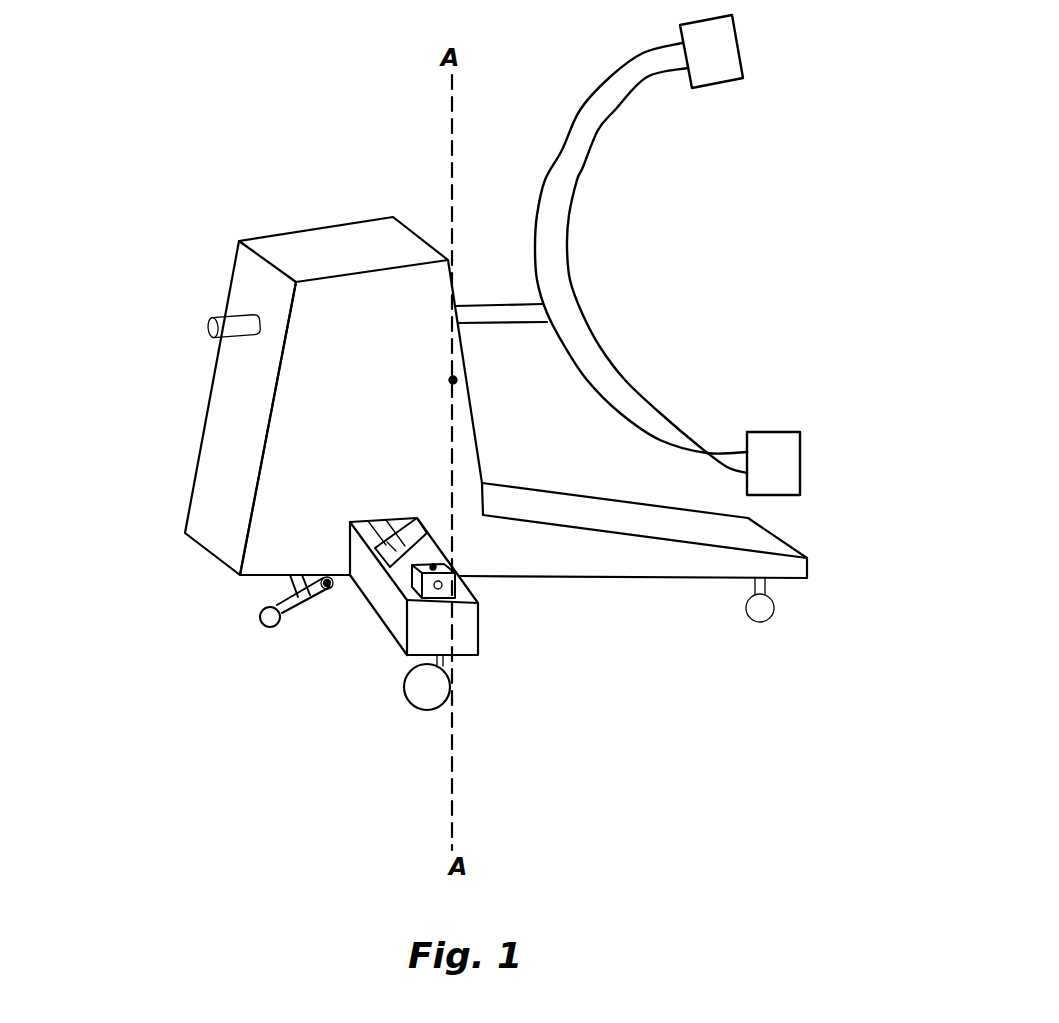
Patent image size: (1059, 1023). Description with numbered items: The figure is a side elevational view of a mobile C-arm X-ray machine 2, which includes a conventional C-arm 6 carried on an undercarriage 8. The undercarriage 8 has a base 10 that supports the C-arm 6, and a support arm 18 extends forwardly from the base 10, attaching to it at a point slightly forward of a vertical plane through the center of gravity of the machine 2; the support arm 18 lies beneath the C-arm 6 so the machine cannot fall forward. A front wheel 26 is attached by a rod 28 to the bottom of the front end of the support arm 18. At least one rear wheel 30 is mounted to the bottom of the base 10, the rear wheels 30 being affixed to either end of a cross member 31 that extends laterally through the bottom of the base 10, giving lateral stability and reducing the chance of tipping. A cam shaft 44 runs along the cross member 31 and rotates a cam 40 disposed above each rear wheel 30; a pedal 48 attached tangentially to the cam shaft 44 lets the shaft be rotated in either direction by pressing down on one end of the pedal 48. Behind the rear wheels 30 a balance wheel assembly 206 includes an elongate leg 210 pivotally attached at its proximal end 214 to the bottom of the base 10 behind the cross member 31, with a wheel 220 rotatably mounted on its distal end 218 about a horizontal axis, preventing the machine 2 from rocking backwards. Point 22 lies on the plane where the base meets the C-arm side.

The mobile C-arm X-ray machine 2 is at (338, 156).
The C-arm 6 is at (573, 152).
The undercarriage 8 is at (160, 423).
The base 10 is at (334, 396).
The support arm 18 is at (613, 513).
The pivot axis point 22 is at (457, 381).
The front wheel 26 is at (760, 608).
The rod 28 is at (753, 585).
The rear wheel 30 is at (428, 697).
The cross member 31 is at (385, 595).
The cam 40 is at (436, 568).
The cam shaft 44 is at (397, 520).
The pedal 48 is at (360, 520).
The balance wheel assembly 206 is at (222, 597).
The elongate leg 210 is at (303, 598).
The proximal end 214 is at (327, 590).
The distal end 218 is at (280, 627).
The wheel 220 is at (260, 619).